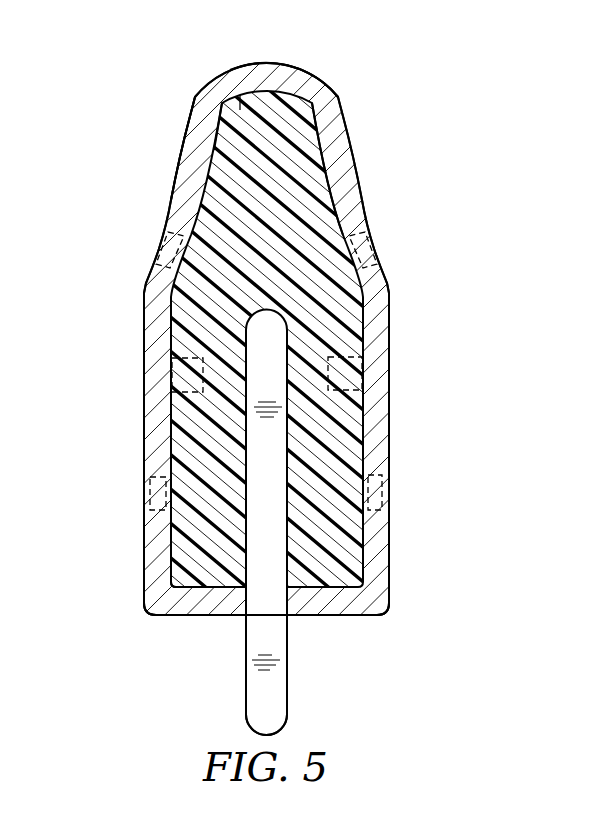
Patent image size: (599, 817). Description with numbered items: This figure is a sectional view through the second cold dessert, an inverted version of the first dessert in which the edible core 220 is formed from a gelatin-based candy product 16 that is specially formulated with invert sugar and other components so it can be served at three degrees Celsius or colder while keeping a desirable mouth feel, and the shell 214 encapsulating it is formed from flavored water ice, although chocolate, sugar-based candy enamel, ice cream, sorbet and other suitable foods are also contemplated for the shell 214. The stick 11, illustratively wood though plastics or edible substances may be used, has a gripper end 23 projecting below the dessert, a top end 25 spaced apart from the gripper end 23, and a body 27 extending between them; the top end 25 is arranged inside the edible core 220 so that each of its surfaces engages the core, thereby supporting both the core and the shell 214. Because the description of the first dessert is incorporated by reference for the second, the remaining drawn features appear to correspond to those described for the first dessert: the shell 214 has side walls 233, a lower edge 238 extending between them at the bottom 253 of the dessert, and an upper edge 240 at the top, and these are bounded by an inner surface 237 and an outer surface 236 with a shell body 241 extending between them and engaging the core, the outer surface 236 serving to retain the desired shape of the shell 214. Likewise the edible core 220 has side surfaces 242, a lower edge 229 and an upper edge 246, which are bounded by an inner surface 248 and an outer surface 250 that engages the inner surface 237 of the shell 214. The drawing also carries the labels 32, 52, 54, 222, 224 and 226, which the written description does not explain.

The stick 11 is at (310, 708).
The gelatin-based candy product 16 is at (300, 222).
The gripper end 23 is at (247, 692).
The top end 25 is at (356, 356).
The body 27 is at (298, 496).
The outer shell 32 is at (337, 193).
The embedded sensor region 52 is at (190, 377).
The neck embedded component 54 is at (175, 253).
The shell 214 is at (360, 140).
The edible core 220 is at (330, 310).
The top wall 222 is at (324, 90).
The bottom wall 224 is at (383, 600).
The inner side wall 226 is at (363, 453).
The bottom inner surface 229 is at (323, 567).
The side wall 233 is at (390, 320).
The neck portion 236 is at (207, 78).
The inner top corner 237 is at (224, 125).
The outer bottom corner 238 is at (157, 612).
The top end 240 is at (262, 62).
The wall portion 241 is at (370, 373).
The embedded element 242 is at (160, 462).
The center axis 246 is at (240, 110).
The inner region 248 is at (195, 540).
The inner bottom corner 250 is at (172, 587).
The bottom surface 253 is at (205, 625).